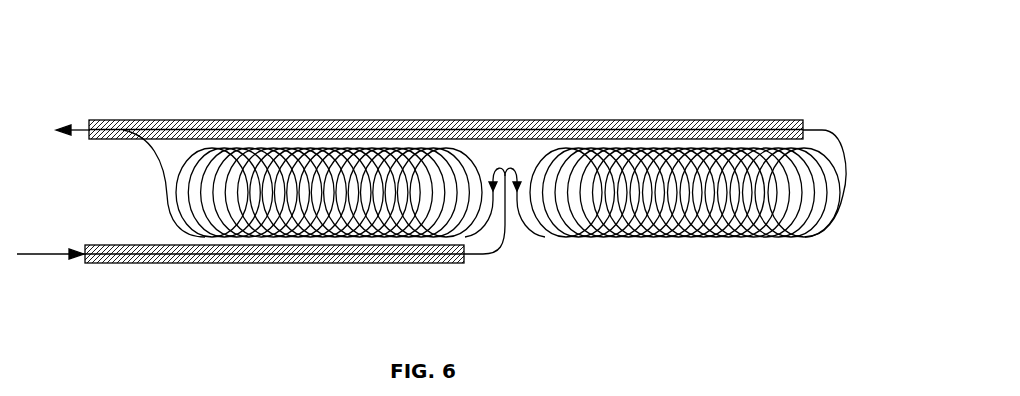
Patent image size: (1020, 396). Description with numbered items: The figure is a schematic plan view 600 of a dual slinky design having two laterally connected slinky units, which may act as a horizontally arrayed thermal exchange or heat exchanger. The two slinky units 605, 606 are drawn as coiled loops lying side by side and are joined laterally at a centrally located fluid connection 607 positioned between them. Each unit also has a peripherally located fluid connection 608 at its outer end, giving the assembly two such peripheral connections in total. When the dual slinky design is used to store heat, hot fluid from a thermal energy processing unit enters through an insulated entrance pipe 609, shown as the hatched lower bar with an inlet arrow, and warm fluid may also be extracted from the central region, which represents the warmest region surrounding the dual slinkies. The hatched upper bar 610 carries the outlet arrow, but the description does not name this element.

The schematic plan view 600 is at (396, 328).
The slinky unit 605 is at (240, 147).
The slinky unit 606 is at (652, 146).
The centrally located fluid connection 607 is at (505, 172).
The peripherally located fluid connection 608 is at (167, 200).
The insulated entrance pipe 609 is at (165, 266).
The upper bus bar 610 is at (365, 119).